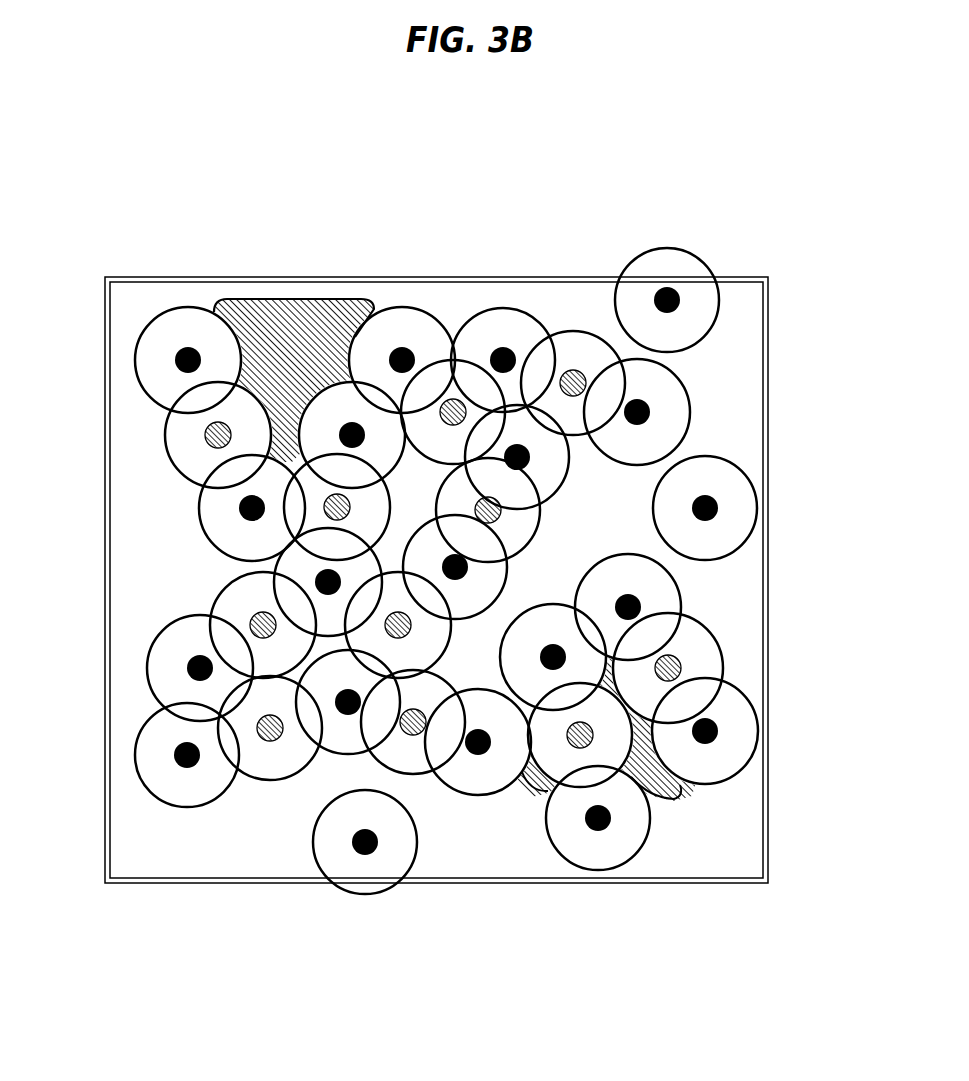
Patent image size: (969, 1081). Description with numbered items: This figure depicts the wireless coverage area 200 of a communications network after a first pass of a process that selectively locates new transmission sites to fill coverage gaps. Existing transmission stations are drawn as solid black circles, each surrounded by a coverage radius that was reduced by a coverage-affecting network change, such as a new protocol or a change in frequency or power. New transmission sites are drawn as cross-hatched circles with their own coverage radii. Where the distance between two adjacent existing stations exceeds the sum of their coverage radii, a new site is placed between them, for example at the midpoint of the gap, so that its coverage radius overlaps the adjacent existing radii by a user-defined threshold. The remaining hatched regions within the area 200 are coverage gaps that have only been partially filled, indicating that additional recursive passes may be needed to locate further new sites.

The wireless coverage area 200 is at (768, 287).